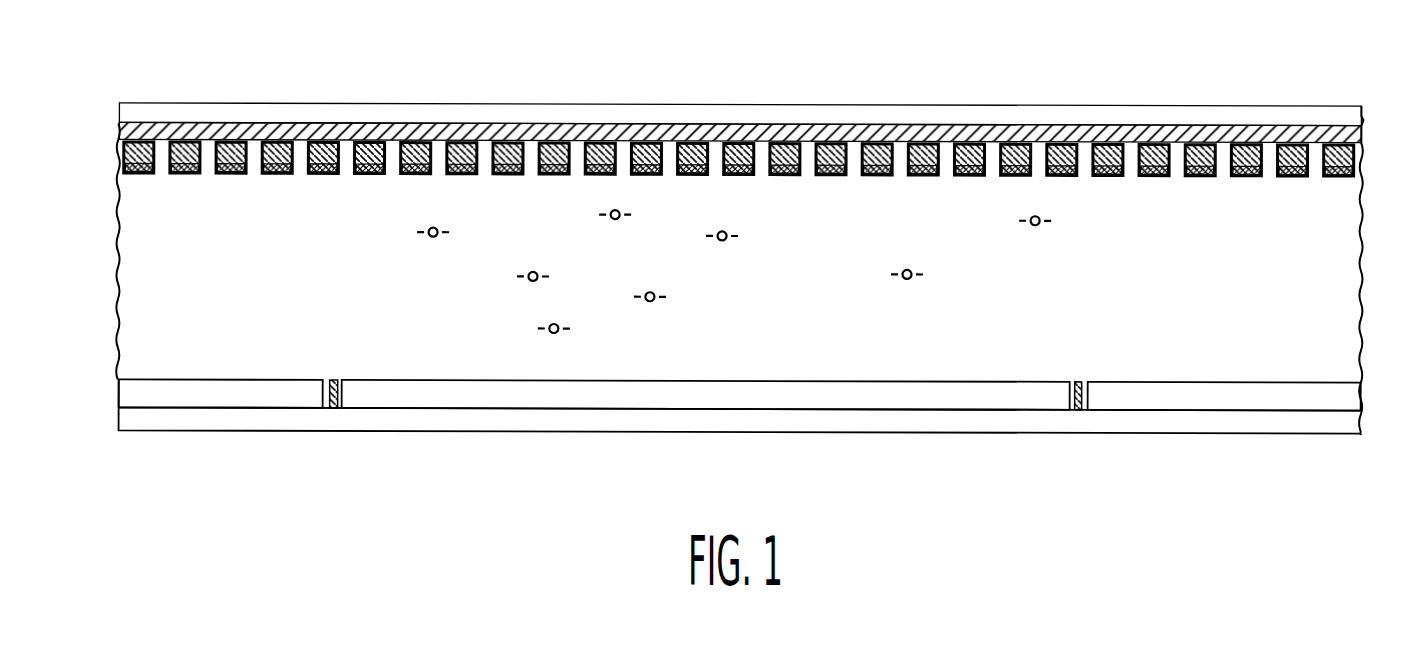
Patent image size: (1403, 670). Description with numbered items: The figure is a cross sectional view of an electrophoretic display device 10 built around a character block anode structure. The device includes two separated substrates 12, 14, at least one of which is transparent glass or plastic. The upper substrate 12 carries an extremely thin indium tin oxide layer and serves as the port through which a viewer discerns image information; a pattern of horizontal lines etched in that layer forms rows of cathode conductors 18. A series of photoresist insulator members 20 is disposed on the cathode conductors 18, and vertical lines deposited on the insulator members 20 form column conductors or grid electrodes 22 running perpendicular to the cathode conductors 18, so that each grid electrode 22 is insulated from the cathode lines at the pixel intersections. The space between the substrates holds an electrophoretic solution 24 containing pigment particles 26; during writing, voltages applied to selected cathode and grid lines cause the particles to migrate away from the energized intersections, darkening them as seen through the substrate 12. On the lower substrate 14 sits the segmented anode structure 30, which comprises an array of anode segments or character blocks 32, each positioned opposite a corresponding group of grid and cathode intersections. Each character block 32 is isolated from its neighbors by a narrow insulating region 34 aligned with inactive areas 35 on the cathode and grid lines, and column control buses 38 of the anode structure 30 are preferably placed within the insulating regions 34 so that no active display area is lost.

The electrophoretic display device 10 is at (1212, 92).
The substrate 12 is at (1064, 108).
The substrate 14 is at (951, 430).
The cathode conductors 18 is at (1370, 133).
The insulator members 20 is at (702, 252).
The grid electrodes 22 is at (183, 176).
The electrophoretic solution 24 is at (1091, 294).
The pigment particles 26 is at (450, 236).
The anode structure 30 is at (768, 338).
The character blocks 32 is at (212, 388).
The insulating region 34 is at (1072, 381).
The inactive areas 35 is at (298, 171).
The column control buses 38 is at (334, 380).